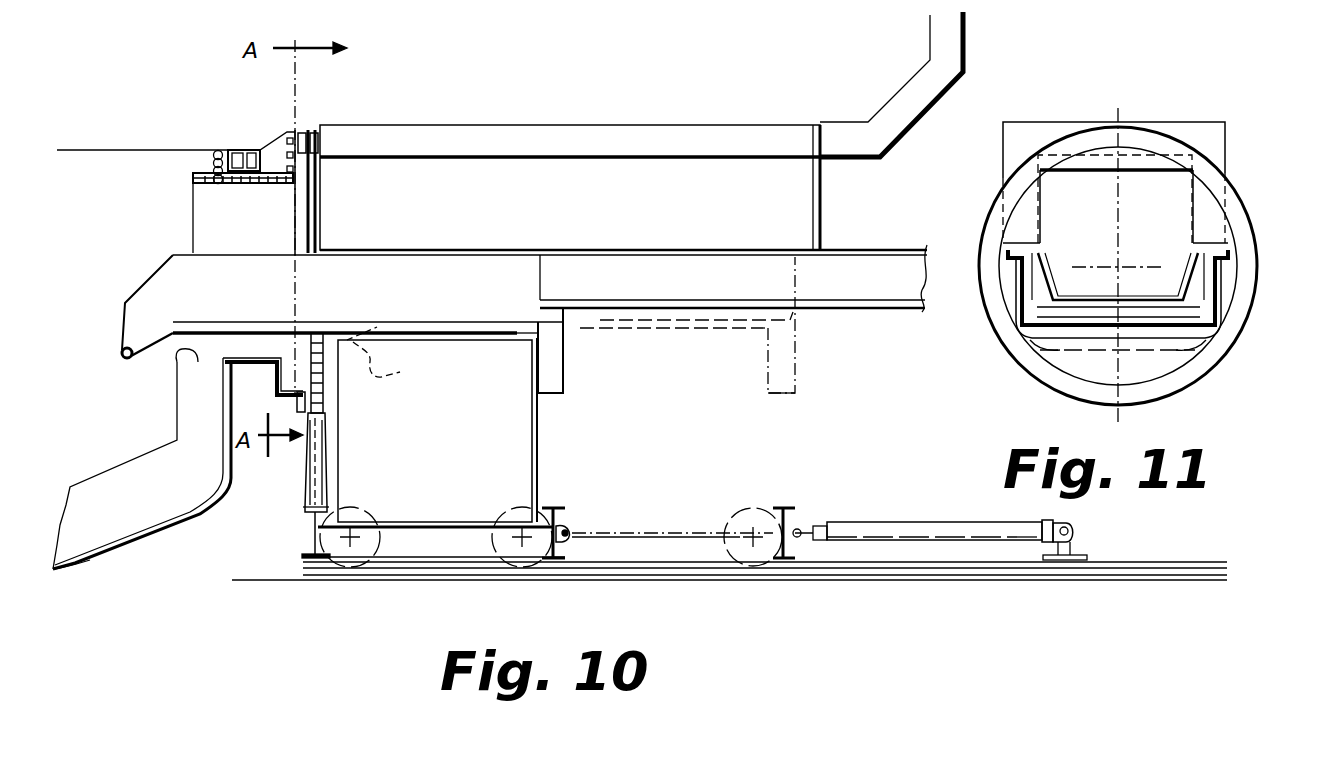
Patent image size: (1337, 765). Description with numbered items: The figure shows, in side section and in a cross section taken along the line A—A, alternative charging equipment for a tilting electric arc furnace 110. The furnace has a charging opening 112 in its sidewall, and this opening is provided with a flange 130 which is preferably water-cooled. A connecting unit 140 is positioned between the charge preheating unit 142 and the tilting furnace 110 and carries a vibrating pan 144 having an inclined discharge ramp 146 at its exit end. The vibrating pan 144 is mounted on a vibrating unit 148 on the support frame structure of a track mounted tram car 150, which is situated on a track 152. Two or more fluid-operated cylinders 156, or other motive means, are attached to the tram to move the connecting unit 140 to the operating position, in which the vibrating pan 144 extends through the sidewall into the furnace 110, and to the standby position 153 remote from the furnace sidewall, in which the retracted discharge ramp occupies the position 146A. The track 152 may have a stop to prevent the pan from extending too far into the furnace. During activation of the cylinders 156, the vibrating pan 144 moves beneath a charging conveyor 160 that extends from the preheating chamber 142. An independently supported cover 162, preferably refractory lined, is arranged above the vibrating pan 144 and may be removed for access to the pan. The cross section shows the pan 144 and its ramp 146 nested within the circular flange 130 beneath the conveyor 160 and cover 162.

In FIG. 10, the tilting electric arc furnace 110 is at (140, 548).
In FIG. 10, the charging opening 112 is at (178, 351).
In FIG. 10, the flange 130 is at (278, 374).
In FIG. 11, the flange 130 is at (1258, 265).
In FIG. 10, the connecting unit 140 is at (537, 453).
In FIG. 10, the charge preheating unit 142 is at (892, 100).
In FIG. 10, the vibrating pan 144 is at (478, 322).
In FIG. 11, the vibrating pan 144 is at (1022, 310).
In FIG. 10, the inclined discharge ramp 146 is at (137, 338).
In FIG. 11, the inclined discharge ramp 146 is at (1150, 348).
In FIG. 10, the retracted discharge ramp position 146A is at (397, 352).
In FIG. 10, the vibrating unit 148 is at (470, 433).
In FIG. 10, the tram car 150 is at (560, 521).
In FIG. 10, the track 152 is at (678, 563).
In FIG. 10, the standby position 153 is at (787, 509).
In FIG. 10, the fluid-operated cylinders 156 is at (922, 522).
In FIG. 10, the charging conveyor 160 is at (540, 290).
In FIG. 11, the charging conveyor 160 is at (1072, 240).
In FIG. 10, the cover 162 is at (562, 125).
In FIG. 11, the cover 162 is at (1180, 122).